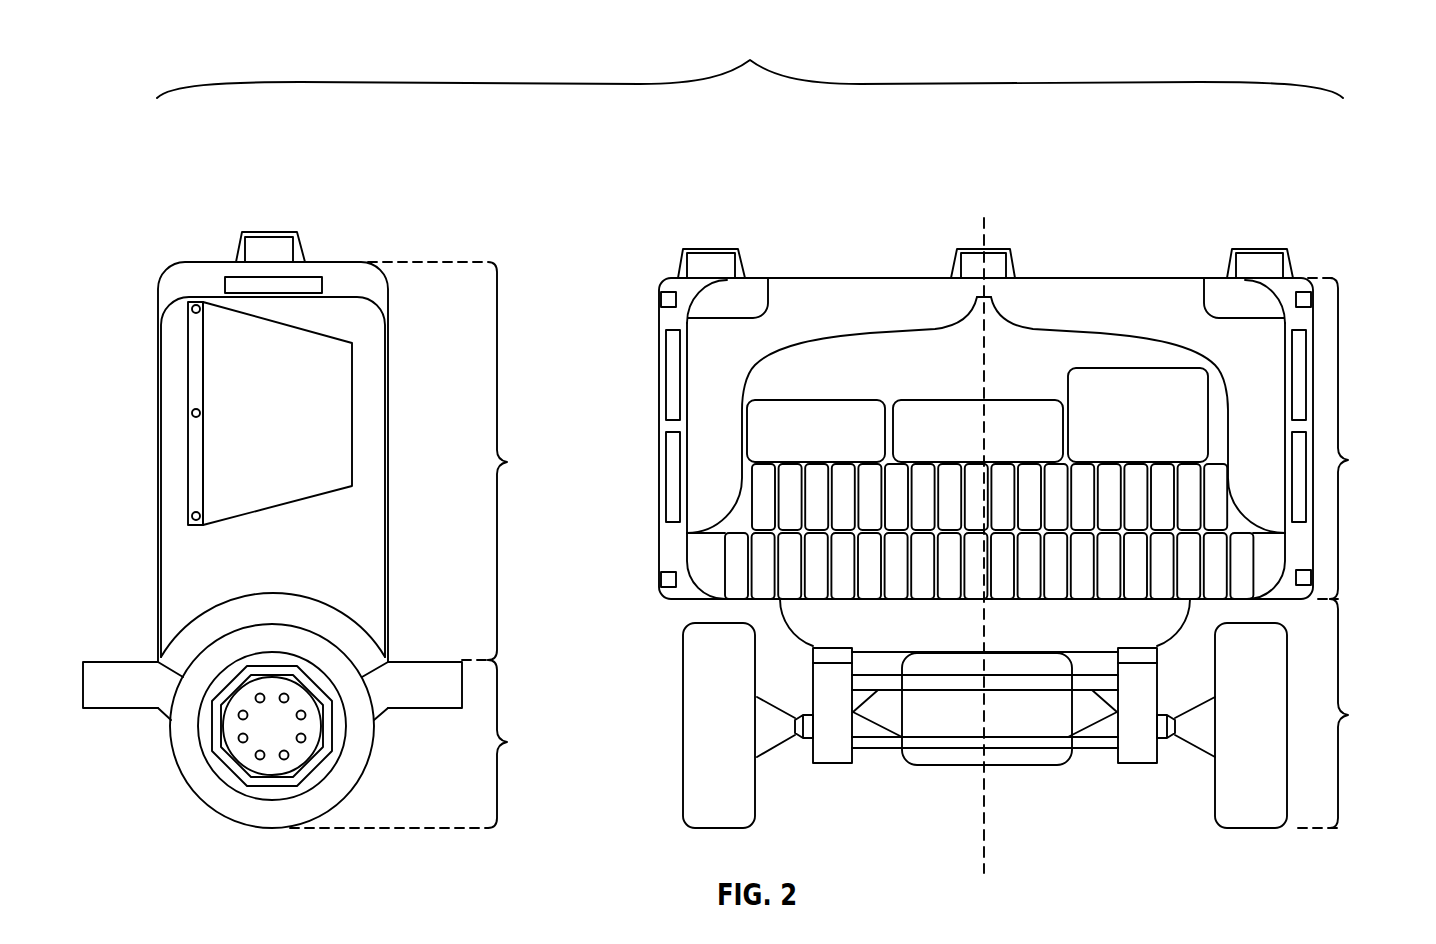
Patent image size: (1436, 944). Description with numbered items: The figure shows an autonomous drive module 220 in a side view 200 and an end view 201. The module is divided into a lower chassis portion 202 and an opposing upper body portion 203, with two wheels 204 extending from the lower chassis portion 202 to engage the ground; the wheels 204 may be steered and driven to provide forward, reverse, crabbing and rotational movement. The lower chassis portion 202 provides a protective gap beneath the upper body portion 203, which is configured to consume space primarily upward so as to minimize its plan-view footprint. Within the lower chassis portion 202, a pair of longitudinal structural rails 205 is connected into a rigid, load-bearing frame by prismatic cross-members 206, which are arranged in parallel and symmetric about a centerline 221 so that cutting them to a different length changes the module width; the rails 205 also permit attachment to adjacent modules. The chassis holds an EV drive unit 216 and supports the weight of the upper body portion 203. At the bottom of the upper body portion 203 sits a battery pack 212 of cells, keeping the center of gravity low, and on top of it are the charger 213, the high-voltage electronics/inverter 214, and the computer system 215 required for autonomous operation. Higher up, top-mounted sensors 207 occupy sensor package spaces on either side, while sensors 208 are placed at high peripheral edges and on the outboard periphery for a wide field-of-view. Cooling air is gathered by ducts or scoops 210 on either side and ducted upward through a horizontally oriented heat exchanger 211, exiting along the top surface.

The side view 200 is at (204, 224).
The end view 201 is at (1302, 172).
The lower chassis portion 202 is at (851, 713).
The upper body portion 203 is at (525, 461).
The wheels 204 is at (192, 770).
The longitudinal structural rails 205 is at (122, 652).
The cross-members 206 is at (1078, 775).
The top-mounted sensors 207 is at (712, 248).
The sensors 208 is at (662, 299).
The ducts or scoops 210 is at (238, 387).
The heat exchanger 211 is at (1070, 296).
The battery pack 212 is at (1051, 534).
The charger 213 is at (838, 446).
The high-voltage electronics/inverter 214 is at (1043, 446).
The computer system 215 is at (1159, 432).
The EV drive unit 216 is at (956, 725).
The autonomous drive module 220 is at (1277, 53).
The centerline 221 is at (982, 835).